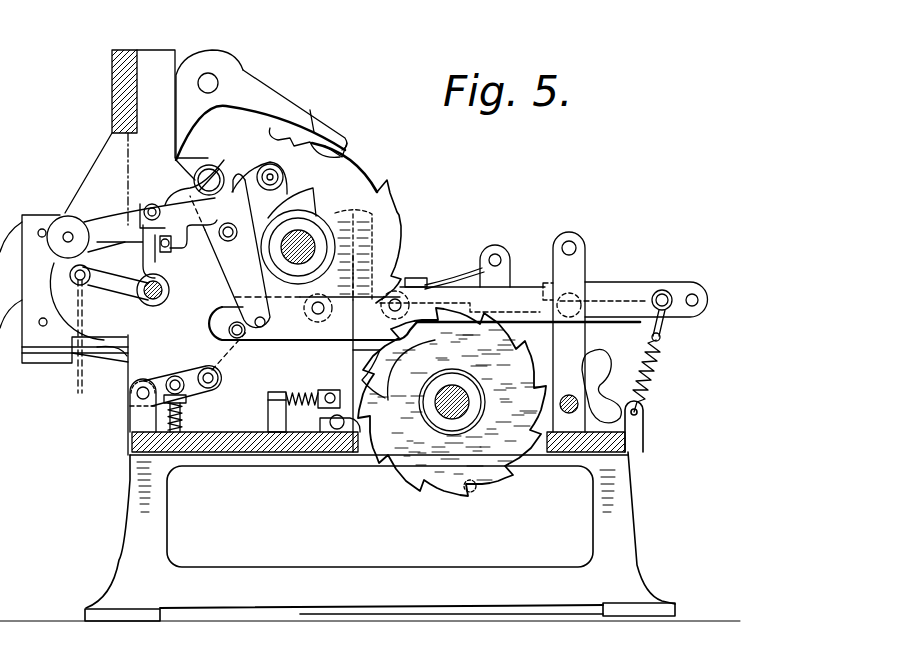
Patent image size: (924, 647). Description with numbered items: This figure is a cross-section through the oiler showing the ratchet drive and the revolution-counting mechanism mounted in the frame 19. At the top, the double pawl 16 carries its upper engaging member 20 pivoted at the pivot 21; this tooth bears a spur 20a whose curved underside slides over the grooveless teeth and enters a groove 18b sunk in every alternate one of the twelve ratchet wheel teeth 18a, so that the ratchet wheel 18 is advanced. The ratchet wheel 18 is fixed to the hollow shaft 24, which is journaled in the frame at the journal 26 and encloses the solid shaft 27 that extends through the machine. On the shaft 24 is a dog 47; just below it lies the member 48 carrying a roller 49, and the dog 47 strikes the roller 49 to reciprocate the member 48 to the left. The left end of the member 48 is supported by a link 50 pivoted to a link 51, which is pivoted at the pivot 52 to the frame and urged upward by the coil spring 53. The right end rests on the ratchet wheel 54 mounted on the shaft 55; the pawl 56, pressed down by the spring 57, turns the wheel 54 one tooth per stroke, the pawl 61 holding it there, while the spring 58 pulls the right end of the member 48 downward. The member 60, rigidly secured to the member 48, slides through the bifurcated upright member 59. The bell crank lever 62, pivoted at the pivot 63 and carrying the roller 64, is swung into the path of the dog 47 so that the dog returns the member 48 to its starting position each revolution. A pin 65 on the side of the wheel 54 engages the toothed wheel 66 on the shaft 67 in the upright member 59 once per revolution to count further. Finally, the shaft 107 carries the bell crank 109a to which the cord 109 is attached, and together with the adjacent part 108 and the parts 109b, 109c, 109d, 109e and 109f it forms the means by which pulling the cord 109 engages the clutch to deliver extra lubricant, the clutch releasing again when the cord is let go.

The pawl 16 is at (36, 216).
The ratchet wheel 18 is at (360, 188).
The ratchet wheel teeth 18a is at (280, 139).
The groove 18b is at (350, 165).
The frame 19 is at (132, 483).
The engaging member 20 is at (280, 97).
The spur 20a is at (330, 136).
The pivot 21 is at (211, 75).
The shaft 24 is at (312, 232).
The journal 26 is at (233, 454).
The solid shaft 27 is at (308, 250).
The dog 47 is at (308, 201).
The member 48 is at (296, 322).
The roller 49 is at (320, 311).
The link 50 is at (236, 342).
The link 51 is at (196, 389).
The pivot 52 is at (140, 395).
The coil spring 53 is at (184, 419).
The ratchet wheel 54 is at (494, 345).
The shaft 55 is at (463, 400).
The pawl 56 is at (548, 290).
The spring 57 is at (440, 284).
The spring 58 is at (658, 378).
The upright member 59 is at (578, 266).
The member 60 is at (616, 283).
The pawl 61 is at (360, 385).
The bell crank lever 62 is at (232, 274).
The pivot 63 is at (205, 172).
The roller 64 is at (283, 178).
The pin 65 is at (477, 491).
The toothed wheel 66 is at (598, 366).
The shaft 67 is at (579, 401).
The shaft 107 is at (164, 292).
The boss 108 is at (156, 302).
The cord 109 is at (79, 375).
The bell crank 109a is at (108, 287).
The extra-lubrication part 109b is at (143, 262).
The extra-lubrication part 109c is at (110, 226).
The extra-lubrication part 109d is at (151, 204).
The extra-lubrication part 109e is at (171, 246).
The extra-lubrication part 109f is at (234, 228).